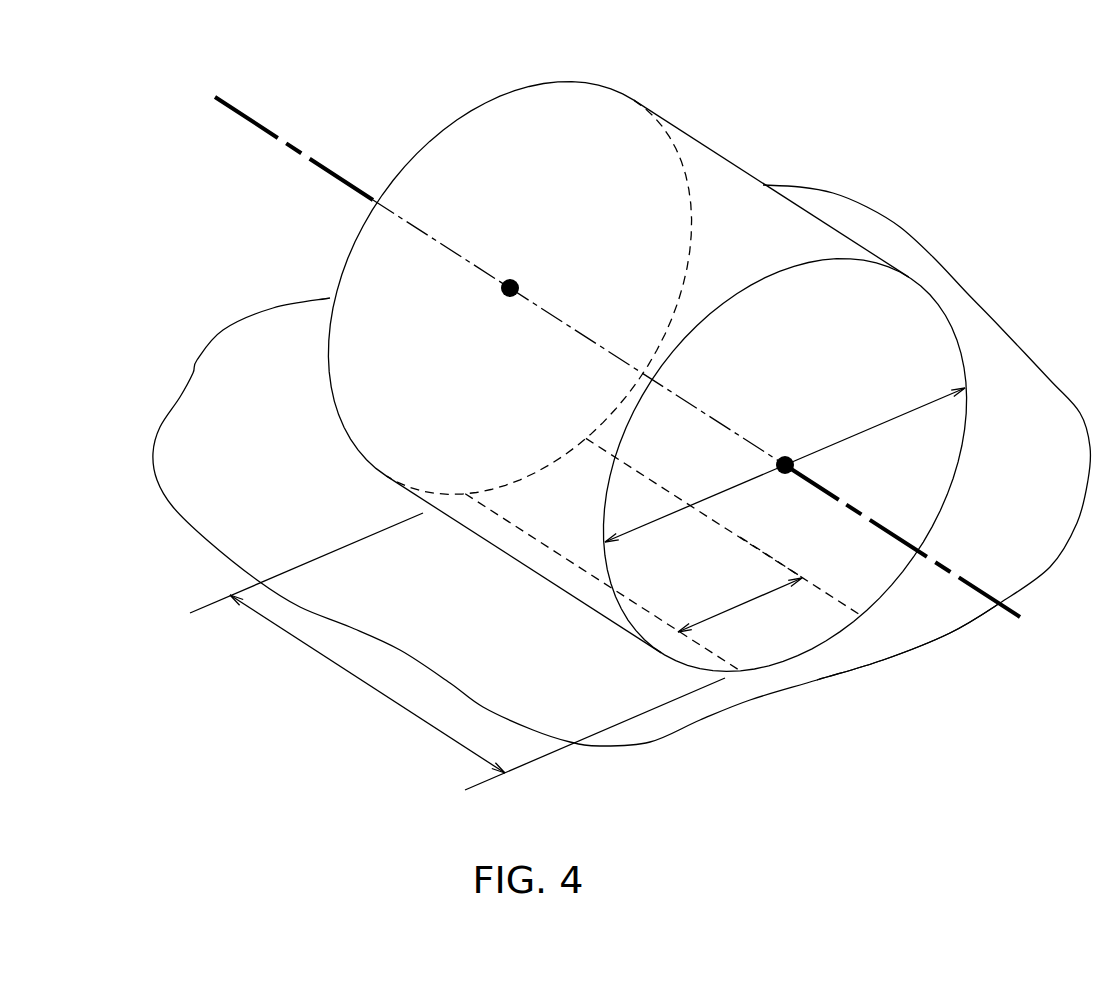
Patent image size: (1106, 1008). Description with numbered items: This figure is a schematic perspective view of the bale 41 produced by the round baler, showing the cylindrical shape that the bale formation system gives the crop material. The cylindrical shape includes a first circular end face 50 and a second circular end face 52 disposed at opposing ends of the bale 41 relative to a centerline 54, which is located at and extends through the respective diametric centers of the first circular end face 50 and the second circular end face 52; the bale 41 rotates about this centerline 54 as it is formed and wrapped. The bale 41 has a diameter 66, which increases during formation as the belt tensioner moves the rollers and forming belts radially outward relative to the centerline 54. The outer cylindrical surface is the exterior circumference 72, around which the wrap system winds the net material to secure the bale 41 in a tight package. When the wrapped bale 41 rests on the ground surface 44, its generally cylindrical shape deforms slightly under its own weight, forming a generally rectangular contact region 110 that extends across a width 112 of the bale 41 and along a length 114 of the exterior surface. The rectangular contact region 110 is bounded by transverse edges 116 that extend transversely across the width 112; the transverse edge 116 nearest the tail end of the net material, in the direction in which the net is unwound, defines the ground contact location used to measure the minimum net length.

The bale 41 is at (726, 134).
The ground surface 44 is at (952, 630).
The first circular end face 50 is at (920, 453).
The second circular end face 52 is at (490, 183).
The centerline 54 is at (977, 581).
The diameter 66 is at (878, 426).
The exterior circumference 72 is at (812, 259).
The rectangular contact region 110 is at (685, 577).
The width 112 is at (343, 670).
The length 114 is at (740, 604).
The transverse edges 116 is at (653, 478).